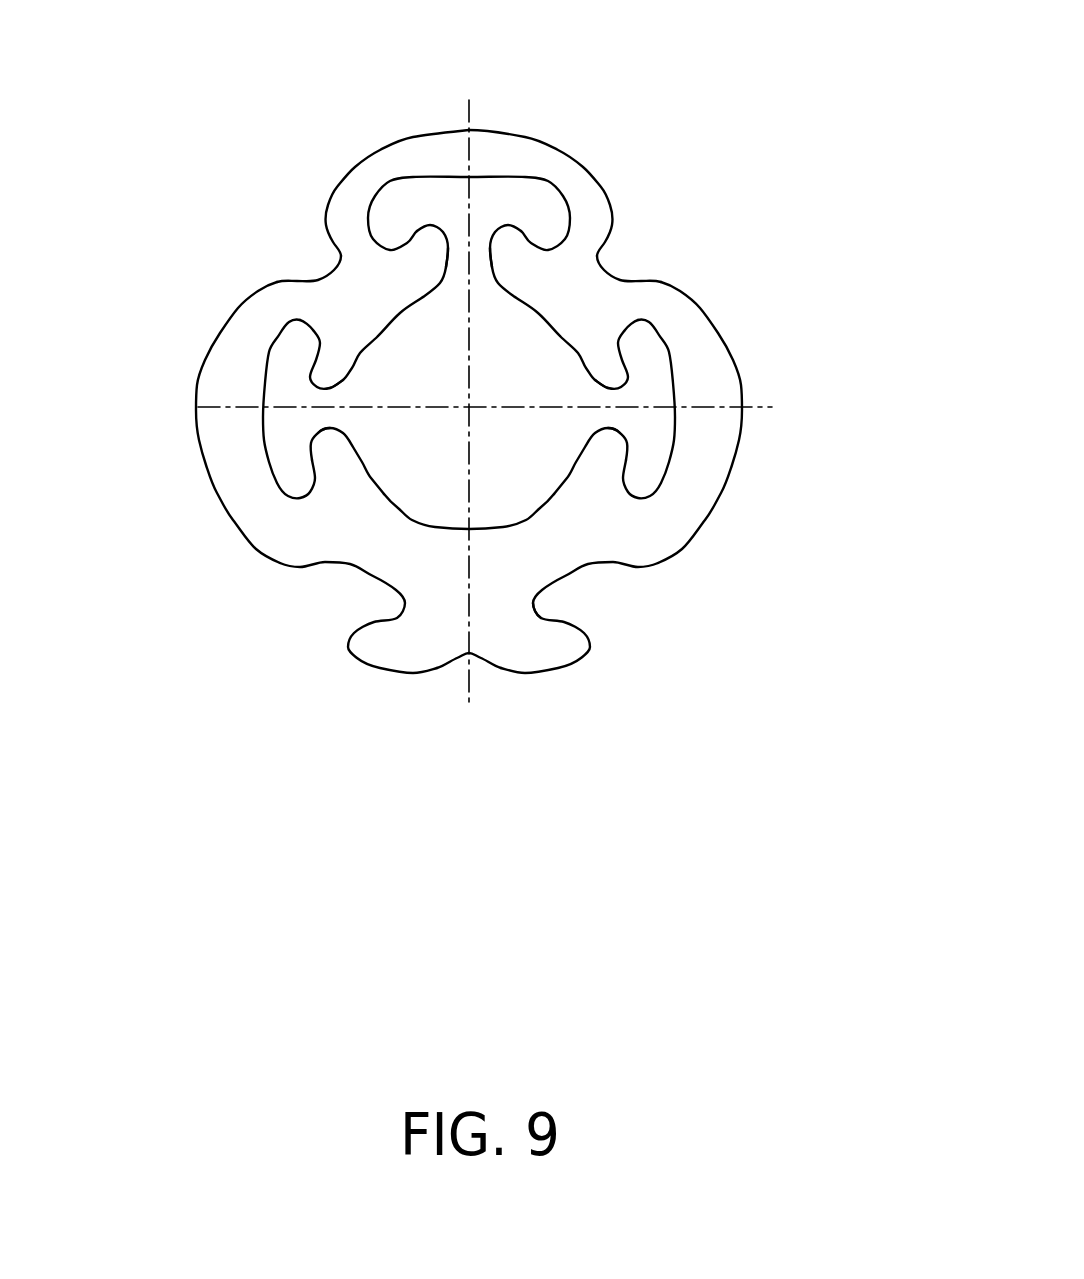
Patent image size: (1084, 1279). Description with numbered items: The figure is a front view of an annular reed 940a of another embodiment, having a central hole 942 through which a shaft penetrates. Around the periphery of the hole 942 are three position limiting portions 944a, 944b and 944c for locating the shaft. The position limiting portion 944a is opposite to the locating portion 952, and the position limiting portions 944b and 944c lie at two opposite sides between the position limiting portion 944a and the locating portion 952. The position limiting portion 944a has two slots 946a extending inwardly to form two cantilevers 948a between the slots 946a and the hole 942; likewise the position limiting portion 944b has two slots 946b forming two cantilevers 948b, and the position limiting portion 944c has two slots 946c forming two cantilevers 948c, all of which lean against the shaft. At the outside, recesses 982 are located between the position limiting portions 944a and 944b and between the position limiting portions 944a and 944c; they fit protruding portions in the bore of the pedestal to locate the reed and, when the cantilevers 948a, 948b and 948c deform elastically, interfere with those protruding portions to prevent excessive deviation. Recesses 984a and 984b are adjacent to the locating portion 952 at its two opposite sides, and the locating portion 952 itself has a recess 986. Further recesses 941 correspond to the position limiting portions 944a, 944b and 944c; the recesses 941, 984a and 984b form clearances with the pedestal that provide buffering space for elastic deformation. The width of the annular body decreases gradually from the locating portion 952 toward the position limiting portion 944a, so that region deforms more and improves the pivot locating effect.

The annular reed 940a is at (820, 945).
The recesses 941 is at (500, 118).
The hole 942 is at (457, 501).
The position limiting portion 944a is at (472, 277).
The position limiting portion 944b is at (351, 428).
The position limiting portion 944c is at (597, 408).
The slots 946a is at (403, 202).
The slots 946b is at (289, 327).
The slots 946c is at (662, 341).
The cantilevers 948a is at (437, 257).
The cantilevers 948b is at (347, 355).
The cantilevers 948c is at (612, 361).
The locating portion 952 is at (557, 647).
The recesses 982 is at (306, 244).
The recess 984a is at (323, 580).
The recess 984b is at (610, 596).
The recess 986 is at (485, 691).